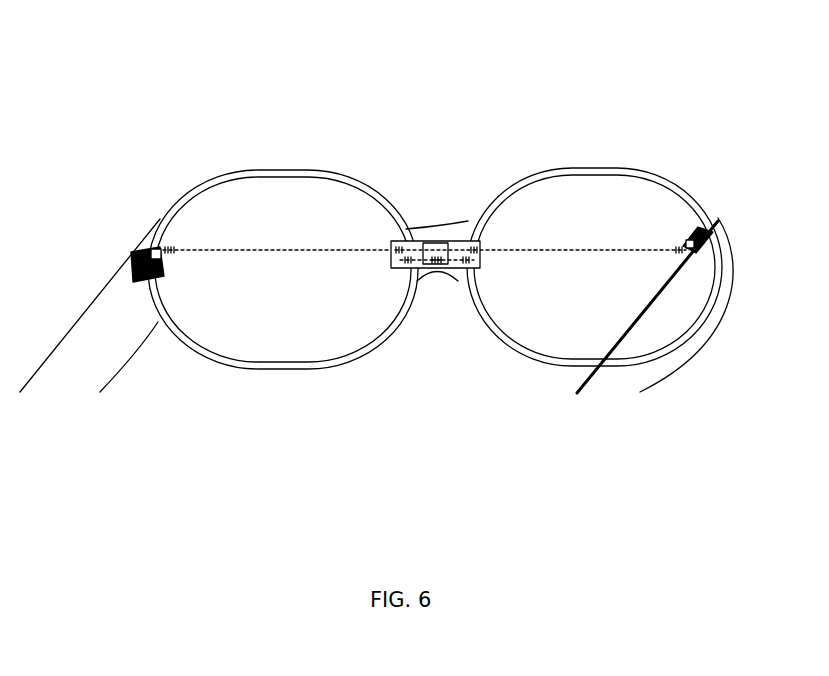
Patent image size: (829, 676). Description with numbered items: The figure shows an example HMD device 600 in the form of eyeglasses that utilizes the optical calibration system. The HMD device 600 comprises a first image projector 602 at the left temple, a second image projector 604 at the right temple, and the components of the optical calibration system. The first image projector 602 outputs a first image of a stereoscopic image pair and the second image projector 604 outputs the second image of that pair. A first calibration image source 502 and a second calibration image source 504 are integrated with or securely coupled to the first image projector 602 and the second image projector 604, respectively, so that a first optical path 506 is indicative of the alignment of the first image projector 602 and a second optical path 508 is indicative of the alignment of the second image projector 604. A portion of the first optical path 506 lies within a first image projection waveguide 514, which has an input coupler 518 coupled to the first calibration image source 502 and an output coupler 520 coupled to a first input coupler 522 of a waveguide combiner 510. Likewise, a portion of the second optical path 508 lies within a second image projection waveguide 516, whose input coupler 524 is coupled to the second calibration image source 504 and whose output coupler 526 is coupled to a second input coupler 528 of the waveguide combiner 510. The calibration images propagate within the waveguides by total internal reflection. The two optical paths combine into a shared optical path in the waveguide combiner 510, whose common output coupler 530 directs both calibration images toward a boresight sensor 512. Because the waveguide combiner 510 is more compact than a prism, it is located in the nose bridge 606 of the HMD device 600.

The HMD device 600 is at (181, 50).
The nose bridge 606 is at (457, 161).
The waveguide combiner 510 is at (422, 240).
The boresight sensor 512 is at (446, 240).
The first image projection waveguide 514 is at (295, 210).
The second image projection waveguide 516 is at (598, 210).
The input coupler 518 is at (171, 240).
The output coupler 520 is at (390, 243).
The first input coupler 522 is at (402, 277).
The output coupler 526 is at (484, 242).
The second input coupler 528 is at (475, 275).
The input coupler 524 is at (668, 256).
The second calibration image source 504 is at (677, 241).
The second image projector 604 is at (712, 238).
The first image projector 602 is at (135, 282).
The first calibration image source 502 is at (172, 259).
The first optical path 506 is at (287, 259).
The second optical path 508 is at (580, 258).
The common output coupler 530 is at (438, 283).